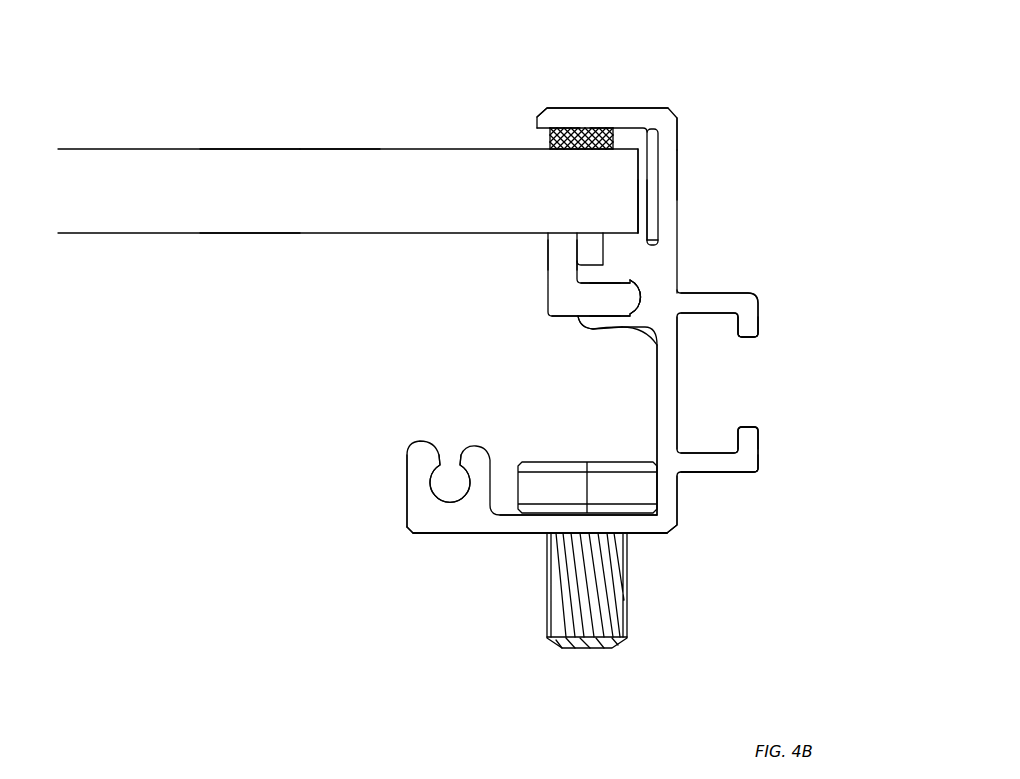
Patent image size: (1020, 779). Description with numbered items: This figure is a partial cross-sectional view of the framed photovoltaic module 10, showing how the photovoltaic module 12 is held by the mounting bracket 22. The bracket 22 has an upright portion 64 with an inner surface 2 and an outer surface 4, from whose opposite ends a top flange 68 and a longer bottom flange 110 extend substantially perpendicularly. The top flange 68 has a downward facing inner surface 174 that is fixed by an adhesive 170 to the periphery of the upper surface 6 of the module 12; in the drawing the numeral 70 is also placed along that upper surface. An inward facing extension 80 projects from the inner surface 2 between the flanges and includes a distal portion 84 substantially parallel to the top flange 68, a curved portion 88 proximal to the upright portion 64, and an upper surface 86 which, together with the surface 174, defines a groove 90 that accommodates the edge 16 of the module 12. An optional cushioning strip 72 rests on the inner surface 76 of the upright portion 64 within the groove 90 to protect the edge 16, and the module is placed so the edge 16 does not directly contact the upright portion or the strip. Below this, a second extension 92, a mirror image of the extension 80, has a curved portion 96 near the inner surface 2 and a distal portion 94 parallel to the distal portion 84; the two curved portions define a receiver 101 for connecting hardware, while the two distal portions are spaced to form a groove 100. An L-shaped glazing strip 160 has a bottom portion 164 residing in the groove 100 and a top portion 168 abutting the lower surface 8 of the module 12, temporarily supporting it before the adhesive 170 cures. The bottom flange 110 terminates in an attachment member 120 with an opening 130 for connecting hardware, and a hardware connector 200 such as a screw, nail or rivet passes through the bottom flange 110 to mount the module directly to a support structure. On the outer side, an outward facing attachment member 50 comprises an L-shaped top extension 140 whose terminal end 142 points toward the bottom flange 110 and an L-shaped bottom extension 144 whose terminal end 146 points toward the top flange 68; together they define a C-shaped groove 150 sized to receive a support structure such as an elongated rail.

The inner surface 2 is at (657, 414).
The outer surface 4 is at (682, 497).
The upper surface 6 is at (333, 149).
The lower surface 8 is at (245, 233).
The framed photovoltaic module 10 is at (627, 93).
The photovoltaic module 12 is at (137, 190).
The edge 16 is at (638, 167).
The mounting bracket 22 is at (648, 525).
The outward facing attachment member 50 is at (763, 293).
The upright portion 64 is at (673, 227).
The top flange 68 is at (640, 117).
The top surface 70 is at (249, 149).
The cushioning strip 72 is at (655, 180).
The inner surface 76 is at (660, 165).
The inward facing extension 80 is at (587, 273).
The distal portion 84 is at (612, 275).
The upper surface 86 is at (610, 276).
The curved portion 88 is at (643, 268).
The groove 90 is at (642, 208).
The second extension 92 is at (580, 319).
The distal portion 94 is at (603, 300).
The curved portion 96 is at (645, 328).
The groove 100 is at (572, 308).
The receiver 101 is at (660, 302).
The bottom flange 110 is at (508, 523).
The attachment member 120 is at (417, 512).
The opening 130 is at (442, 482).
The top extension 140 is at (713, 305).
The terminal end 142 is at (747, 330).
The bottom extension 144 is at (727, 463).
The terminal end 146 is at (752, 443).
The C-shaped groove 150 is at (715, 402).
The glazing strip 160 is at (563, 280).
The bottom portion 164 is at (592, 317).
The top portion 168 is at (560, 250).
The adhesive 170 is at (563, 128).
The downward facing inner surface 174 is at (607, 128).
The hardware connector 200 is at (612, 604).